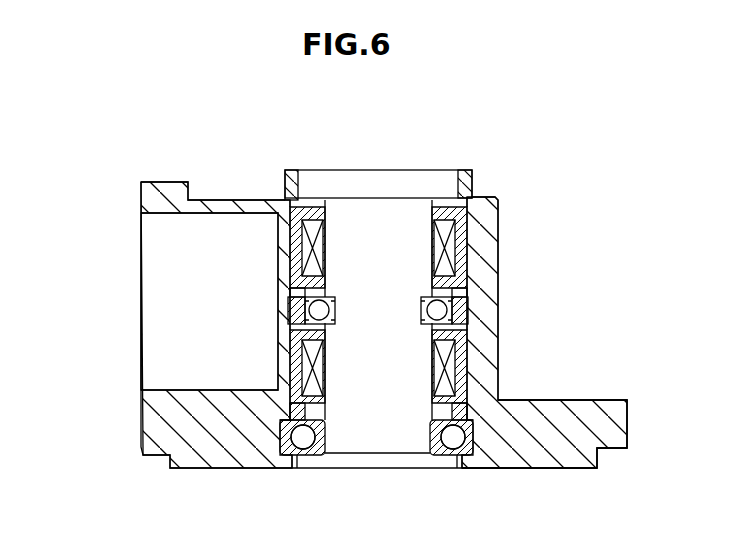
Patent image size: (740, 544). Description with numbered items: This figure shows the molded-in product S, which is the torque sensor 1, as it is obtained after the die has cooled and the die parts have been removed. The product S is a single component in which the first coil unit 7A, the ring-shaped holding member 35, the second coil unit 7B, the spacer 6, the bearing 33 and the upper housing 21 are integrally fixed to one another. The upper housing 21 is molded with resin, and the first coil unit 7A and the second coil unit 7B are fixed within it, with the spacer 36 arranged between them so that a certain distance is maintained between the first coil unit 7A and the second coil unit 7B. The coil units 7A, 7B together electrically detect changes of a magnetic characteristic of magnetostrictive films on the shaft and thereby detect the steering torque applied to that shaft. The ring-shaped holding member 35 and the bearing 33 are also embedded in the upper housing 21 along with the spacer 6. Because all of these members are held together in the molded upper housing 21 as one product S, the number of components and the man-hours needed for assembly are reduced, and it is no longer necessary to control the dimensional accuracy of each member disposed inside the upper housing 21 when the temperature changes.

The torque sensor 1 is at (198, 162).
The product S is at (515, 192).
The upper housing 21 is at (467, 165).
The first coil unit 7A is at (467, 235).
The second coil unit 7B is at (468, 350).
The spacer 36 is at (494, 274).
The ring-shaped holding member 35 is at (468, 292).
The bearing 33 is at (451, 440).
The spacer 6 is at (456, 408).